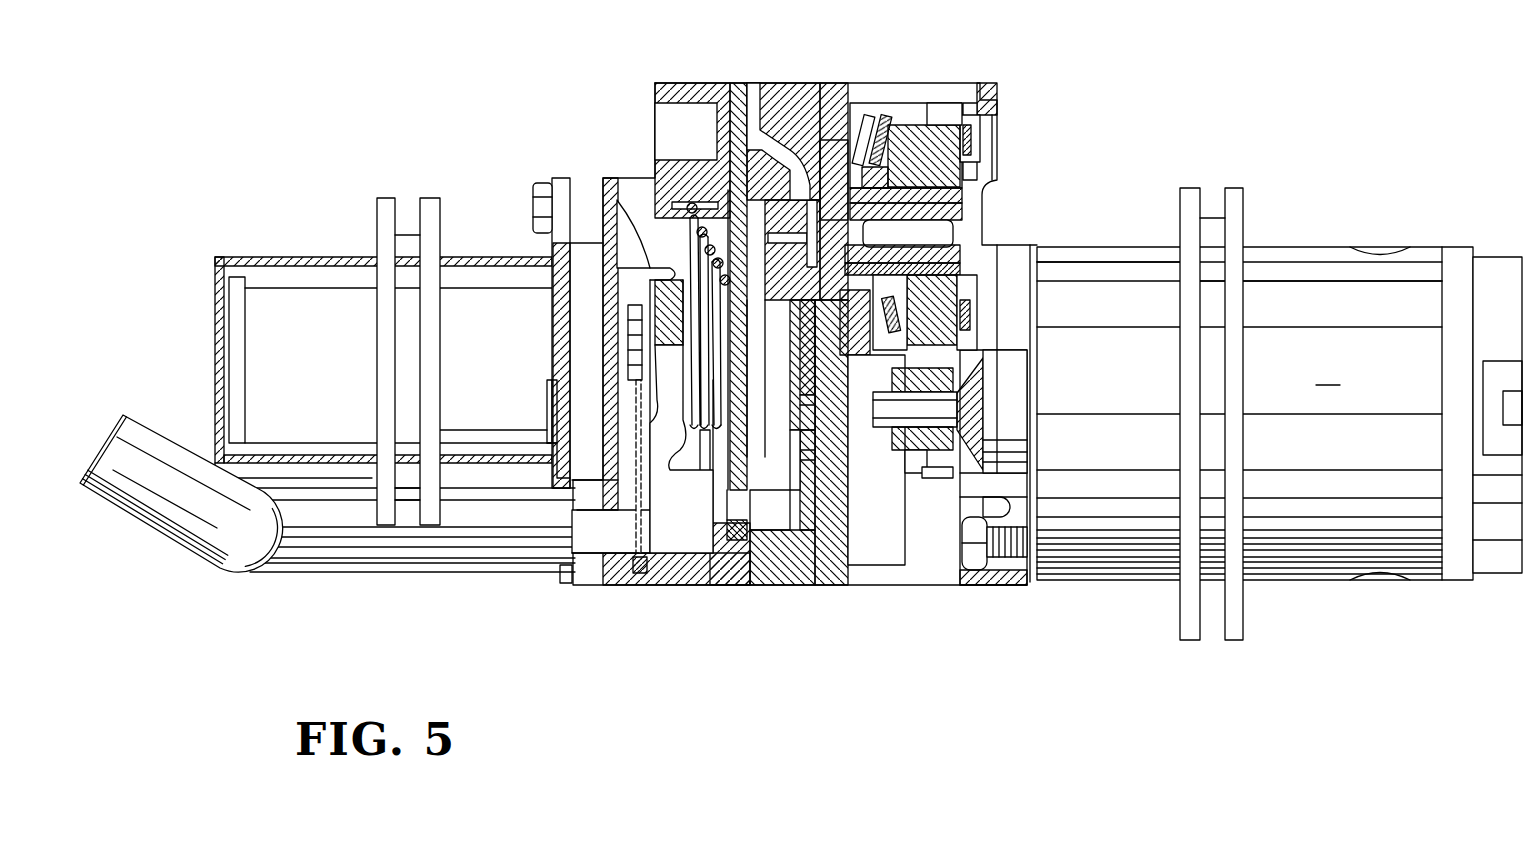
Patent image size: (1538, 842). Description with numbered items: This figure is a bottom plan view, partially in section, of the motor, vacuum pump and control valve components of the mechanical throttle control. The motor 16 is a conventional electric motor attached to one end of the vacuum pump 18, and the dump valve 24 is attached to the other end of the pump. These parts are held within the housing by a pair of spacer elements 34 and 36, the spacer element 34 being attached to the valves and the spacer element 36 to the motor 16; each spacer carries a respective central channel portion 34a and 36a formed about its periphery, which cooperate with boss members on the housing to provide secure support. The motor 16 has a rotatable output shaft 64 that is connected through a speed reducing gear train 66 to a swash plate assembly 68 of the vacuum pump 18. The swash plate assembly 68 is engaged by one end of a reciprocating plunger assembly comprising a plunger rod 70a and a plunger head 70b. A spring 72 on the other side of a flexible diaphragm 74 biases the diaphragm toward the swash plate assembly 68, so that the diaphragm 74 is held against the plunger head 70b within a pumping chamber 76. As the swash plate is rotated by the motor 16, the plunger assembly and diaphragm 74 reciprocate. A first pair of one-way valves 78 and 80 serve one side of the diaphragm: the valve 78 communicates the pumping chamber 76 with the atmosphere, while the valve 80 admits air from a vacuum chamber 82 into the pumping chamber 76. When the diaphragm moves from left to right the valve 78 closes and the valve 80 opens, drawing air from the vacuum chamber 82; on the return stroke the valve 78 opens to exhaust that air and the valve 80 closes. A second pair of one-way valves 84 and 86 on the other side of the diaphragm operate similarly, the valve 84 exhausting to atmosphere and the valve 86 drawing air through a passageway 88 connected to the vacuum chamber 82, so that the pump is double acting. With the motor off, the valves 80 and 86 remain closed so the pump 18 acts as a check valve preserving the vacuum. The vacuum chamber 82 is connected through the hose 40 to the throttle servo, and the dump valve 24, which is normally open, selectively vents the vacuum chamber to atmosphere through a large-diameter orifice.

The motor 16 is at (1279, 413).
The vacuum pump 18 is at (887, 92).
The dump valve 24 is at (490, 322).
The spacer element 34 is at (398, 330).
The central channel portion 34a is at (400, 355).
The spacer element 36 is at (1240, 195).
The central channel portion 36a is at (1215, 285).
The hose 40 is at (338, 557).
The output shaft 64 is at (938, 412).
The speed reducing gear train 66 is at (927, 470).
The swash plate assembly 68 is at (835, 135).
The plunger rod 70a is at (760, 300).
The plunger head 70b is at (790, 268).
The spring 72 is at (690, 245).
The flexible diaphragm 74 is at (742, 215).
The pumping chamber 76 is at (703, 447).
The one-way valve 78 is at (648, 295).
The one-way valve 80 is at (630, 365).
The vacuum chamber 82 is at (597, 537).
The one-way valve 84 is at (798, 200).
The one-way valve 86 is at (817, 418).
The passageway 88 is at (764, 508).